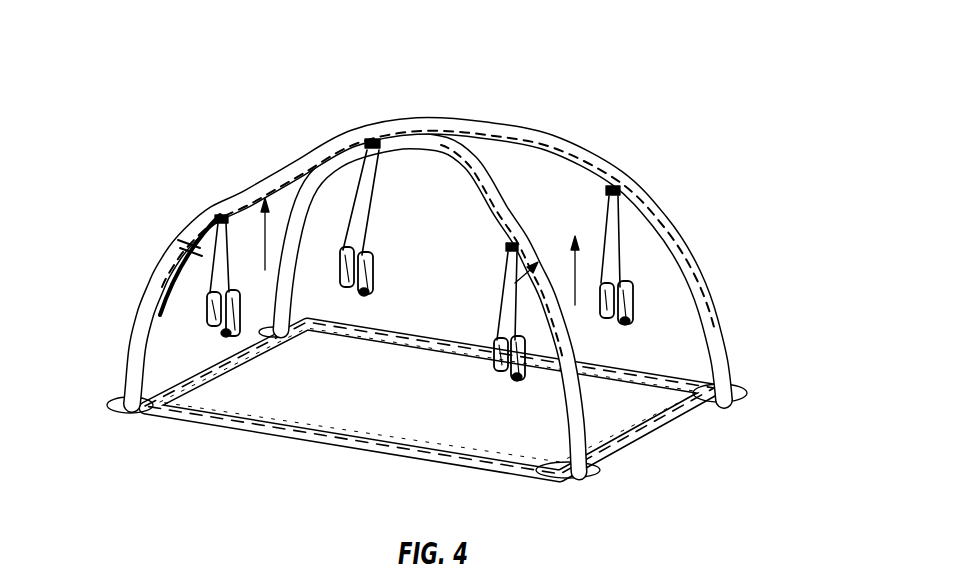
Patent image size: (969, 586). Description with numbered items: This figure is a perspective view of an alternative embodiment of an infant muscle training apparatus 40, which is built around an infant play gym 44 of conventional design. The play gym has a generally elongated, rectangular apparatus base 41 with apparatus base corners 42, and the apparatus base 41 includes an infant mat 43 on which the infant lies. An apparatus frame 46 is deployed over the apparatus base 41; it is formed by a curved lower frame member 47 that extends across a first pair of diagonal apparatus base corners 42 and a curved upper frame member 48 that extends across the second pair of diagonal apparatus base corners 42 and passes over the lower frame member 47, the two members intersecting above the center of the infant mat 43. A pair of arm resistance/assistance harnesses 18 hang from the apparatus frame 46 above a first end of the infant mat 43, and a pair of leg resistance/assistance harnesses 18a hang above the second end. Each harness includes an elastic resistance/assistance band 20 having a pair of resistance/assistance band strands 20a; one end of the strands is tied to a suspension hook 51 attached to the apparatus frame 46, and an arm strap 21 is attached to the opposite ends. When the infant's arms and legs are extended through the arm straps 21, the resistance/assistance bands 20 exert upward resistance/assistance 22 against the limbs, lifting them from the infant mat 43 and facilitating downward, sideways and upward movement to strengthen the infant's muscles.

The arm resistance/assistance harness 18 is at (215, 350).
The leg resistance/assistance harness 18a is at (482, 380).
The elastic resistance/assistance band 20 is at (192, 264).
The resistance/assistance band strands 20a is at (215, 255).
The arm strap 21 is at (207, 312).
The upward resistance/assistance 22 is at (268, 240).
The infant muscle training apparatus 40 is at (306, 92).
The apparatus base 41 is at (323, 458).
The apparatus base corners 42 is at (125, 413).
The infant mat 43 is at (437, 427).
The infant play gym 44 is at (748, 282).
The apparatus frame 46 is at (556, 127).
The curved lower frame member 47 is at (490, 194).
The curved upper frame member 48 is at (447, 124).
The suspension hook 51 is at (188, 232).